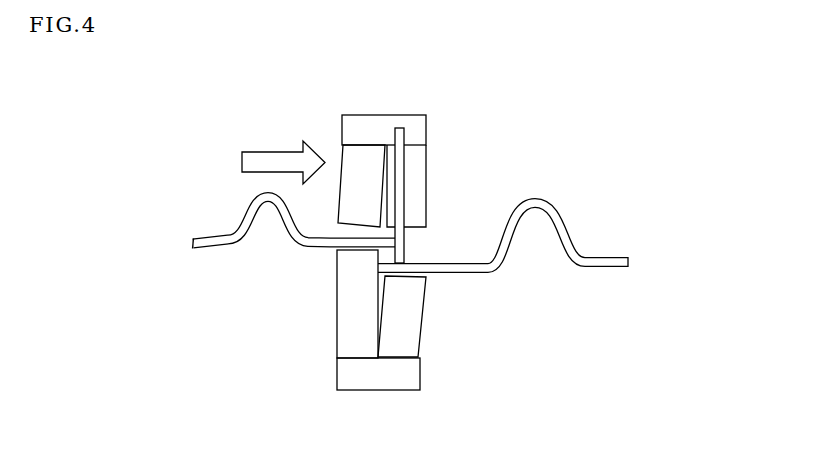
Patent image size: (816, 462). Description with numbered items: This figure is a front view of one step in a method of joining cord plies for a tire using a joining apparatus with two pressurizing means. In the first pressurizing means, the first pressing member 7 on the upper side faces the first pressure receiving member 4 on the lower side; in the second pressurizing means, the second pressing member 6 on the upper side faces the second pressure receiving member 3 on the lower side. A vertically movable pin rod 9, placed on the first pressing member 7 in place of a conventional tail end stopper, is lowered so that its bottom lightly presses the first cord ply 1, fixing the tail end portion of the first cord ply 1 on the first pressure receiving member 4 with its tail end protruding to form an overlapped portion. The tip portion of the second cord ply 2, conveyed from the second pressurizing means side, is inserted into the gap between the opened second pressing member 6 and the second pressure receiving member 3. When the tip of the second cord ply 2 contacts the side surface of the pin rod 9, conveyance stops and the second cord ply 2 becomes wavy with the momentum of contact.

The first cord ply 1 is at (593, 263).
The second cord ply 2 is at (220, 245).
The second pressure receiving member 3 is at (350, 303).
The first pressure receiving member 4 is at (410, 315).
The second pressing member 6 is at (358, 165).
The first pressing member 7 is at (413, 192).
The pin rod 9 is at (402, 135).